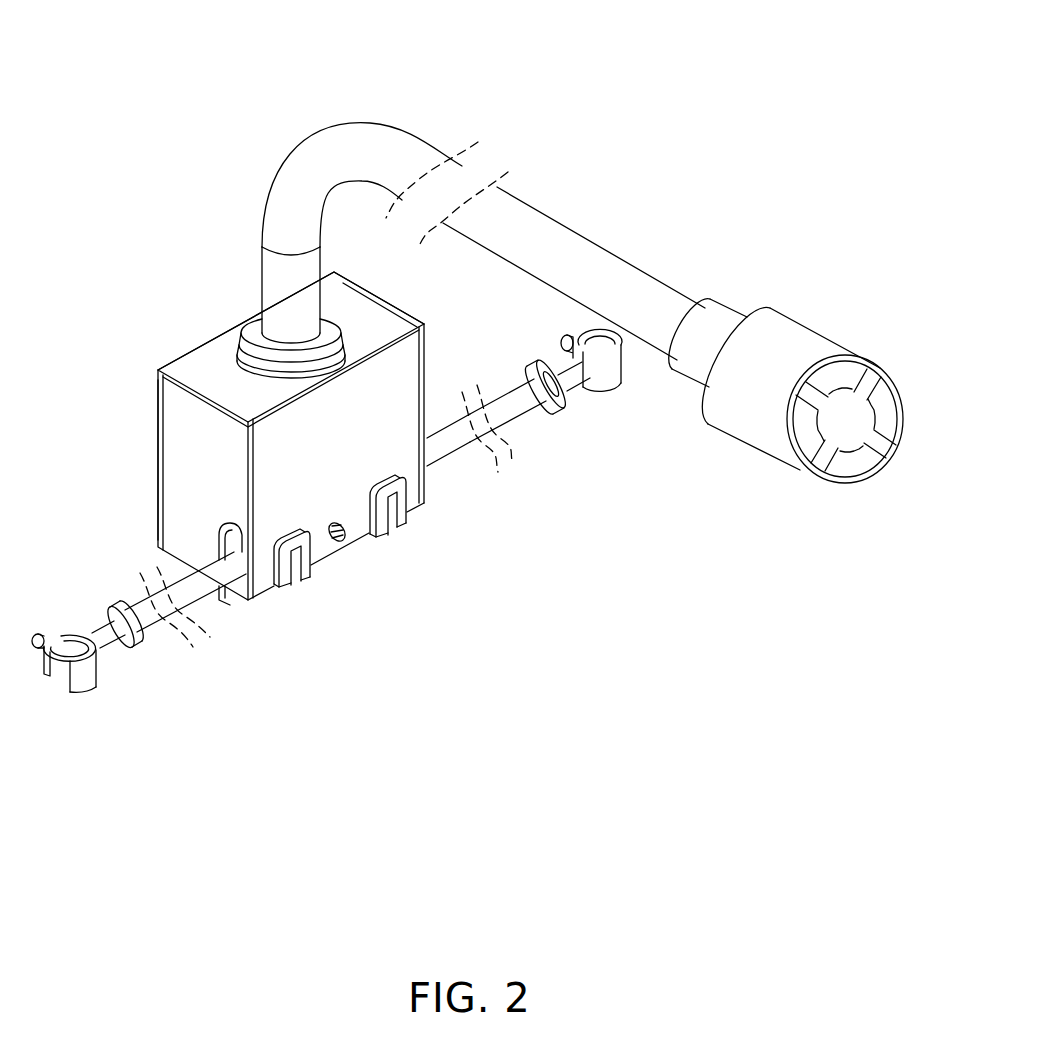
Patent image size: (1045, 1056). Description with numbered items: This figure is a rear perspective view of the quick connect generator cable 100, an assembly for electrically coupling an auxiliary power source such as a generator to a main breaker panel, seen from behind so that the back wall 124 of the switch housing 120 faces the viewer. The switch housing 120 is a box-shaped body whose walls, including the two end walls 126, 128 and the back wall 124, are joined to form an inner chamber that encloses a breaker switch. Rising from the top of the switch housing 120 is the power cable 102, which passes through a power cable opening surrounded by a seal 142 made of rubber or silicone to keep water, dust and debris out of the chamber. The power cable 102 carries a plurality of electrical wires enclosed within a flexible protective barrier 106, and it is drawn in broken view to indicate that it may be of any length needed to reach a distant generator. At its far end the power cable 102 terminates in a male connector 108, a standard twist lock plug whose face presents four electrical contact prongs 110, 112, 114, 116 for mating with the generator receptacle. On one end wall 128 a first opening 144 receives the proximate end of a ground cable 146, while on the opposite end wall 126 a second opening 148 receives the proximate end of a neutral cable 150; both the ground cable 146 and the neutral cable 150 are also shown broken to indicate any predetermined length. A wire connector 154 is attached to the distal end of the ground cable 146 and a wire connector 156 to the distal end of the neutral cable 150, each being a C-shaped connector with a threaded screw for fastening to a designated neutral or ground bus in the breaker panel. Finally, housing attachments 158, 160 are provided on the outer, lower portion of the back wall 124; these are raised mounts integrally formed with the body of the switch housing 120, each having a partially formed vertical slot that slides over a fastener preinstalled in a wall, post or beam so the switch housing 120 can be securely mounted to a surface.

The quick connect generator cable 100 is at (247, 86).
The power cable 102 is at (620, 277).
The flexible protective barrier 106 is at (440, 158).
The male connector 108 is at (797, 331).
The electrical contact prong 110 is at (849, 377).
The electrical contact prong 112 is at (816, 461).
The electrical contact prong 114 is at (877, 418).
The electrical contact prong 116 is at (849, 473).
The switch housing 120 is at (153, 389).
The back wall 124 is at (353, 528).
The end wall 126 is at (378, 296).
The end wall 128 is at (163, 462).
The seal 142 is at (250, 325).
The first opening 144 is at (226, 597).
The ground cable 146 is at (152, 625).
The second opening 148 is at (428, 436).
The neutral cable 150 is at (508, 417).
The wire connector 154 is at (83, 688).
The wire connector 156 is at (588, 376).
The housing attachment 158 is at (290, 590).
The housing attachment 160 is at (407, 512).